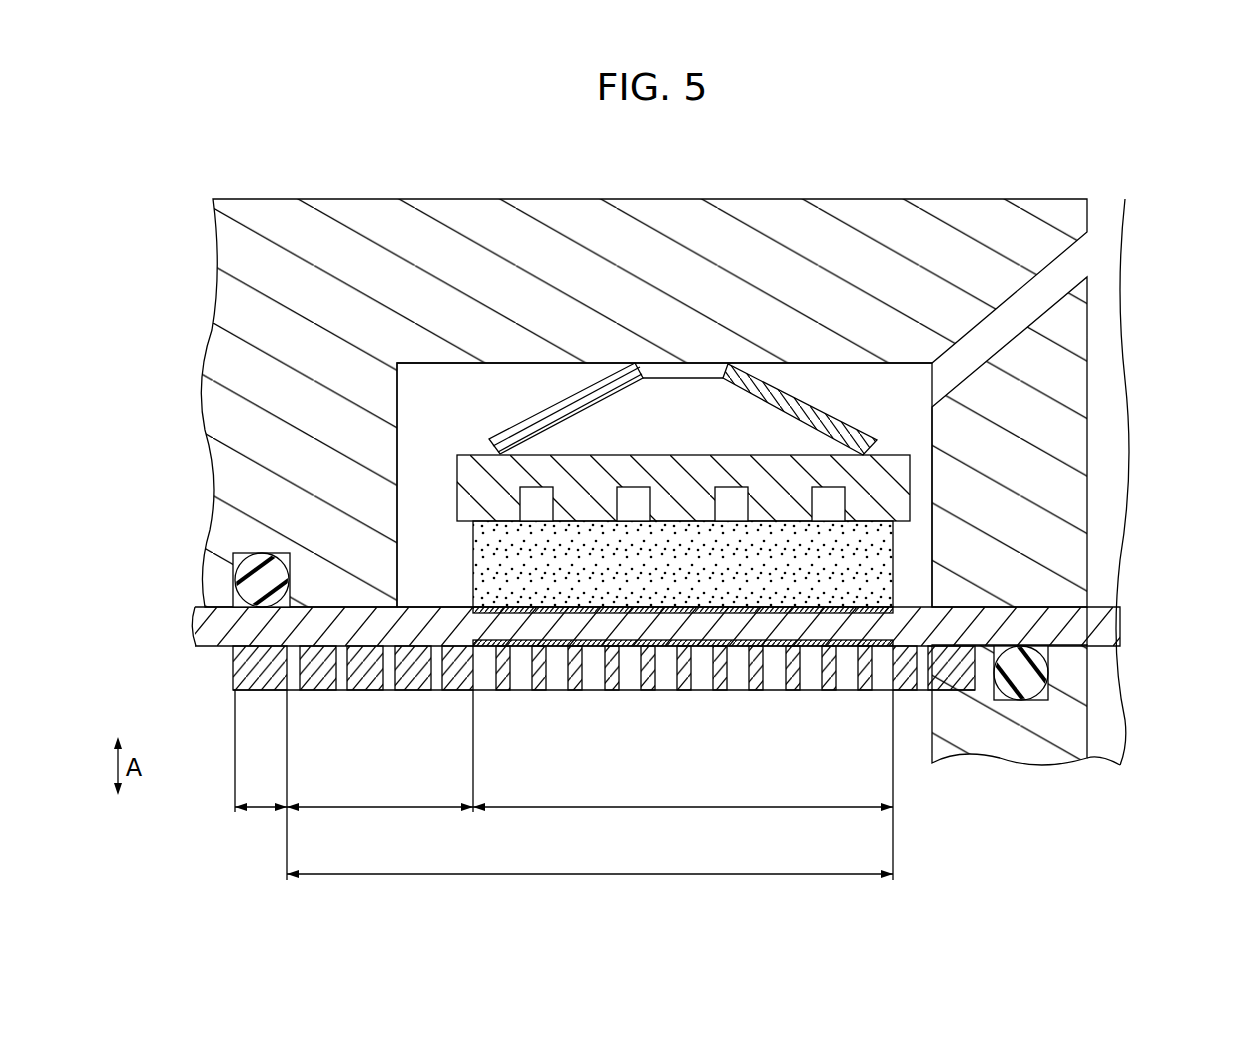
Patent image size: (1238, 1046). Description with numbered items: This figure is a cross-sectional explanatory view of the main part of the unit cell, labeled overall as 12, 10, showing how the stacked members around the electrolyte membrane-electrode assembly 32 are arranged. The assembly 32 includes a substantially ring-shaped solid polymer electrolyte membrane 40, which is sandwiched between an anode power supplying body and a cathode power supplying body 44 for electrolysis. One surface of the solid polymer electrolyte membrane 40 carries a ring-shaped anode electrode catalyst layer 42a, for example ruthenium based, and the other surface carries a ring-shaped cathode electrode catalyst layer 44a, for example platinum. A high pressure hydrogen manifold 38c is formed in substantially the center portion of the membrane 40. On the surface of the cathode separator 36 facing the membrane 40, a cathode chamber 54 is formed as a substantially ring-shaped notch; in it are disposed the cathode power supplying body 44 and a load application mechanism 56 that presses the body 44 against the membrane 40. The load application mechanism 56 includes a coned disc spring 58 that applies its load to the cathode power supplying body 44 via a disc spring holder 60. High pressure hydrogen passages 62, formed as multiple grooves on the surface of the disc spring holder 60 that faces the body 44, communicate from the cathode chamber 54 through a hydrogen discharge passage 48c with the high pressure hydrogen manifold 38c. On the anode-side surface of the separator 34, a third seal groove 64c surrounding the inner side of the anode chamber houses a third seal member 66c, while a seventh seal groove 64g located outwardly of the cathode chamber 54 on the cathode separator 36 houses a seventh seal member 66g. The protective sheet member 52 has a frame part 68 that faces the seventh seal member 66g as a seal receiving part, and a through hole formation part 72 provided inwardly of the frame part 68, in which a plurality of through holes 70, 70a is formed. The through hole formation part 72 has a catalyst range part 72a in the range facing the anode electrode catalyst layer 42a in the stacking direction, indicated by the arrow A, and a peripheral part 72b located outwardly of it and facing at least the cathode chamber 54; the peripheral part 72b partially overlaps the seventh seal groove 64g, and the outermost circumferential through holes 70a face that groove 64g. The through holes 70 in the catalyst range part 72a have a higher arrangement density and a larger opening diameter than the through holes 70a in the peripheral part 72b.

The laser processing apparatus 10 is at (813, 151).
The processing head 12 is at (774, 151).
The electrolyte membrane-electrode assembly 32 is at (184, 625).
The side wall 34 is at (974, 776).
The cathode separator 36 is at (251, 194).
The high pressure hydrogen manifold 38c is at (1112, 405).
The solid polymer electrolyte membrane 40 is at (422, 620).
The anode electrode catalyst layer 42a is at (598, 647).
The cathode power supplying body 44 is at (662, 555).
The cathode electrode catalyst layer 44a is at (512, 608).
The hydrogen discharge passage 48c is at (1052, 277).
The protective sheet member 52 is at (225, 686).
The cathode chamber 54 is at (440, 385).
The load application mechanism 56 is at (566, 372).
The coned disc spring 58 is at (812, 410).
The disc spring holder 60 is at (597, 478).
The high pressure hydrogen passages 62 is at (729, 497).
The third seal groove 64c is at (1025, 690).
The seventh seal groove 64g is at (258, 588).
The third seal member 66c is at (1025, 673).
The seventh seal member 66g is at (253, 565).
The frame part 68 is at (261, 785).
The through holes 70 is at (704, 684).
The outermost circumferential through holes 70a is at (390, 686).
The through hole formation part 72 is at (590, 861).
The catalyst range part 72a is at (683, 785).
The peripheral part 72b is at (380, 751).